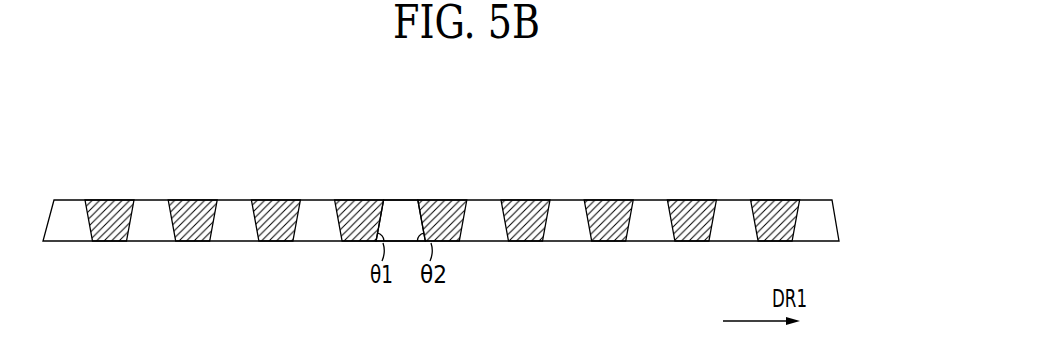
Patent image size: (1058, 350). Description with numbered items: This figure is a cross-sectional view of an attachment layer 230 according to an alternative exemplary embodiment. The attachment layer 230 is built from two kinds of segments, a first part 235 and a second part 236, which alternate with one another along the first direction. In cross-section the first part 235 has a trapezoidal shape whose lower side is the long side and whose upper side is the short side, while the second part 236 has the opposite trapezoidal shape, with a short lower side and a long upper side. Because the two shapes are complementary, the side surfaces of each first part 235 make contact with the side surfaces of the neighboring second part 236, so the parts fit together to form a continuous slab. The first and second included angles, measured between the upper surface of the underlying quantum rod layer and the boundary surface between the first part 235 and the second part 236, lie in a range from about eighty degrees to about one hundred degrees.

The attachment layer 230 is at (849, 220).
The first part 235 is at (400, 210).
The second part 236 is at (523, 210).